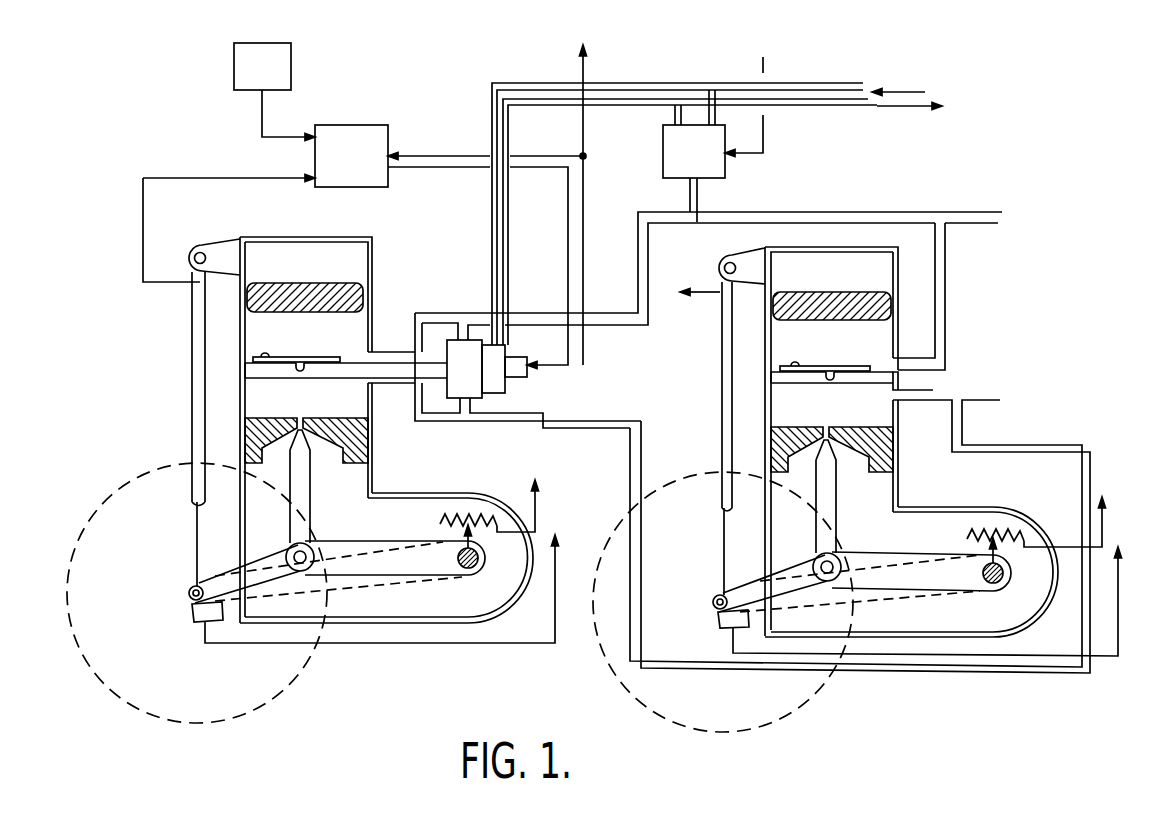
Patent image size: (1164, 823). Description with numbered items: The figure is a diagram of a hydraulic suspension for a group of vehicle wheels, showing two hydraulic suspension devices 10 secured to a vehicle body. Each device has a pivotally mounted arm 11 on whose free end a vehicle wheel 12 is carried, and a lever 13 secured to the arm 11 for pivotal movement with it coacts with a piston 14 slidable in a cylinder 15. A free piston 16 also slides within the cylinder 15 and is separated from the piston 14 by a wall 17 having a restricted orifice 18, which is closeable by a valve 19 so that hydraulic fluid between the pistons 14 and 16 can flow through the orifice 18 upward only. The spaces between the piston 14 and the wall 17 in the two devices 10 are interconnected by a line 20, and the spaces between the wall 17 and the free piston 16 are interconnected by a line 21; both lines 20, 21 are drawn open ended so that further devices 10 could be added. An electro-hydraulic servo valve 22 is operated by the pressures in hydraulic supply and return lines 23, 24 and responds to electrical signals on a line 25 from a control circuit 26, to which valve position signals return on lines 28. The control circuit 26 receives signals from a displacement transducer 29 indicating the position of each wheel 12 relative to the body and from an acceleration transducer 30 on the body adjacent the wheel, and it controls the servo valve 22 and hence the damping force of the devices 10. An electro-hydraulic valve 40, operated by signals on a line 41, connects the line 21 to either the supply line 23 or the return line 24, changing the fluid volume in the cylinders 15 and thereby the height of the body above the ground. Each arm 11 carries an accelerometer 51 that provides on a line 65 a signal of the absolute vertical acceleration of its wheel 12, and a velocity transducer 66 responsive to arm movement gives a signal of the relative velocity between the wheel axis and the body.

The hydraulic suspension device 10 is at (375, 658).
The arm 11 is at (222, 585).
The vehicle wheel 12 is at (258, 670).
The lever 13 is at (326, 548).
The piston 14 is at (262, 432).
The cylinder 15 is at (372, 270).
The free piston 16 is at (292, 283).
The wall 17 is at (237, 373).
The restricted orifice 18 is at (300, 371).
The valve 19 is at (318, 357).
The line 20 is at (630, 420).
The line 21 is at (612, 320).
The electro-hydraulic servo valve 22 is at (497, 372).
The hydraulic supply line 23 is at (805, 86).
The hydraulic return line 24 is at (826, 108).
The line 25 is at (449, 165).
The control circuit 26 is at (295, 160).
The line 28 is at (584, 208).
The displacement transducer 29 is at (452, 508).
The acceleration transducer 30 is at (280, 62).
The electro-hydraulic valve 40 is at (698, 157).
The line 41 is at (757, 65).
The accelerometer 51 is at (200, 612).
The line 65 is at (515, 650).
The velocity transducer 66 is at (200, 320).